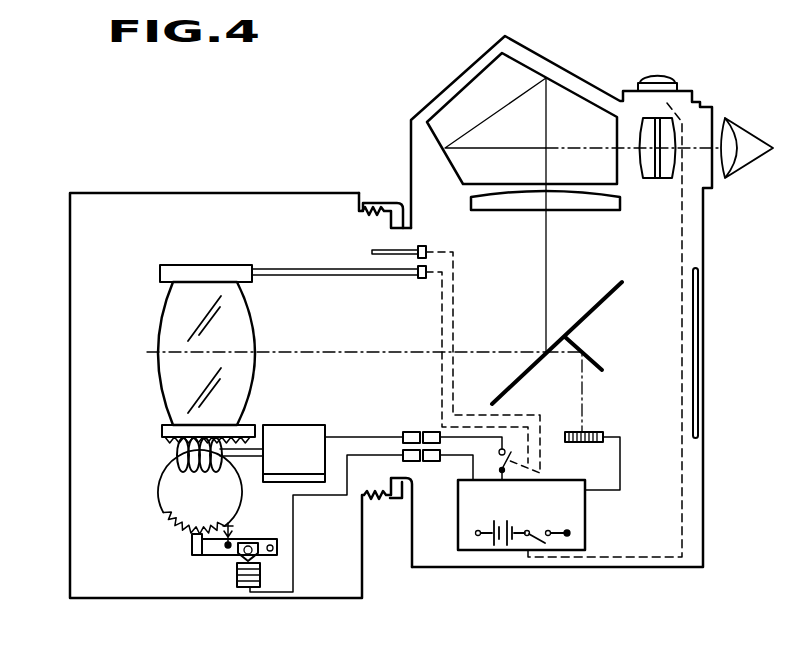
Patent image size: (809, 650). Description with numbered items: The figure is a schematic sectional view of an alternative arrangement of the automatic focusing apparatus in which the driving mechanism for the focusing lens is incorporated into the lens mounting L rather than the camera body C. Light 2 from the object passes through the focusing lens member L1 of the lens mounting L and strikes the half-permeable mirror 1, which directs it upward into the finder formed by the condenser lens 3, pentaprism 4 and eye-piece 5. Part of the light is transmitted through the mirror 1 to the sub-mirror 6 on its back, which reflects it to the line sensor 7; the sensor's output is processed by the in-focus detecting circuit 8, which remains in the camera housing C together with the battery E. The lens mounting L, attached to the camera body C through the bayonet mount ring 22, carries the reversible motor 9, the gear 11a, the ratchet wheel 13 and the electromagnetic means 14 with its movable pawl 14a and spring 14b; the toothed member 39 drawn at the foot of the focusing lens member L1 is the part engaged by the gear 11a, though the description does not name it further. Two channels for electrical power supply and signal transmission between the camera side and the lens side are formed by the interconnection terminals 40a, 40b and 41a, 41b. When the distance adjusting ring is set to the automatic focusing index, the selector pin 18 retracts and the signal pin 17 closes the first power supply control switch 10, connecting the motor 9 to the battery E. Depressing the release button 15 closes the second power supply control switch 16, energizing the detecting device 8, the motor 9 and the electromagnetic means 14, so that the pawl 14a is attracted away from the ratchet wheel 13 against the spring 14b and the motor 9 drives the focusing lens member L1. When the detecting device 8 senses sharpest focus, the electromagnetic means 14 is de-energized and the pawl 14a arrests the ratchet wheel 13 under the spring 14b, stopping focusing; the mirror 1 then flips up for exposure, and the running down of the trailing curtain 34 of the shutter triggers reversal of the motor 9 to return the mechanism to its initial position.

The lens mounting L is at (221, 193).
The camera body C is at (540, 54).
The pentaprism 4 is at (574, 113).
The condenser lens 3 is at (578, 203).
The eye-piece 5 is at (653, 175).
The release button 15 is at (657, 80).
The trailing curtain 34 is at (697, 318).
The half-permeable mirror 1 is at (600, 302).
The sub-mirror 6 is at (597, 358).
The line sensor 7 is at (595, 430).
The light 2 is at (372, 350).
The focusing lens member L1 is at (236, 327).
The selector pin 18 is at (390, 250).
The signal pin 17 is at (428, 246).
The first power supply control switch 10 is at (497, 450).
The lens mount rack 39 is at (165, 428).
The gear 11a is at (178, 452).
The reversible motor 9 is at (293, 438).
The ratchet wheel 13 is at (175, 492).
The electromagnetic means 14 is at (237, 572).
The movable pawl 14a is at (200, 550).
The spring 14b is at (232, 538).
The bayonet mount ring 22 is at (388, 500).
The interconnection terminal 41a is at (428, 432).
The interconnection terminal 41b is at (411, 433).
The interconnection terminal 40a is at (432, 462).
The interconnection terminal 40b is at (413, 462).
The in-focus detecting circuit 8 is at (573, 513).
The battery E is at (506, 545).
The second power supply control switch 16 is at (542, 546).